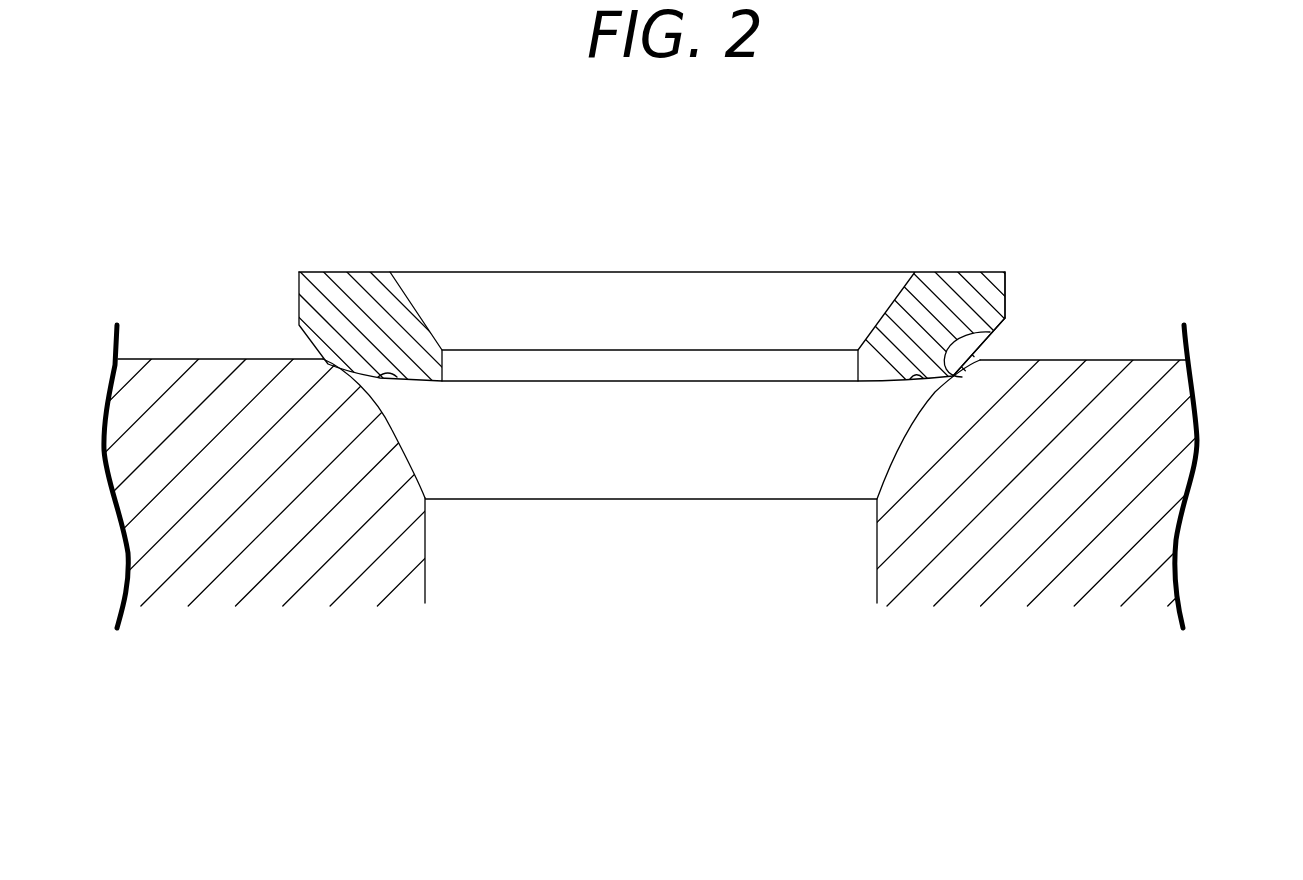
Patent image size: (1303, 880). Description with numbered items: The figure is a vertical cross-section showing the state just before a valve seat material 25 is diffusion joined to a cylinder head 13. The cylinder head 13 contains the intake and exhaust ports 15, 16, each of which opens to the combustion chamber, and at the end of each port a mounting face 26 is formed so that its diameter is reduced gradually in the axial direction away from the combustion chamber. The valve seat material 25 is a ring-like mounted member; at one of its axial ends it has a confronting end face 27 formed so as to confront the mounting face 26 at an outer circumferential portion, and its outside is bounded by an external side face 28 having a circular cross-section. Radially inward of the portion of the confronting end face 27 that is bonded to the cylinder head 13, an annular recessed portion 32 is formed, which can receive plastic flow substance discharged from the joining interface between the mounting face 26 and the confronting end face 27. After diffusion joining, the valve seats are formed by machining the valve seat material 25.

The cylinder head 13 is at (1145, 513).
The intake port 15 is at (695, 596).
The exhaust port 16 is at (873, 553).
The valve seat material 25 is at (953, 287).
The mounting face 26 is at (992, 332).
The confronting end face 27 is at (944, 366).
The external side face 28 is at (1005, 288).
The annular recessed portion 32 is at (920, 377).